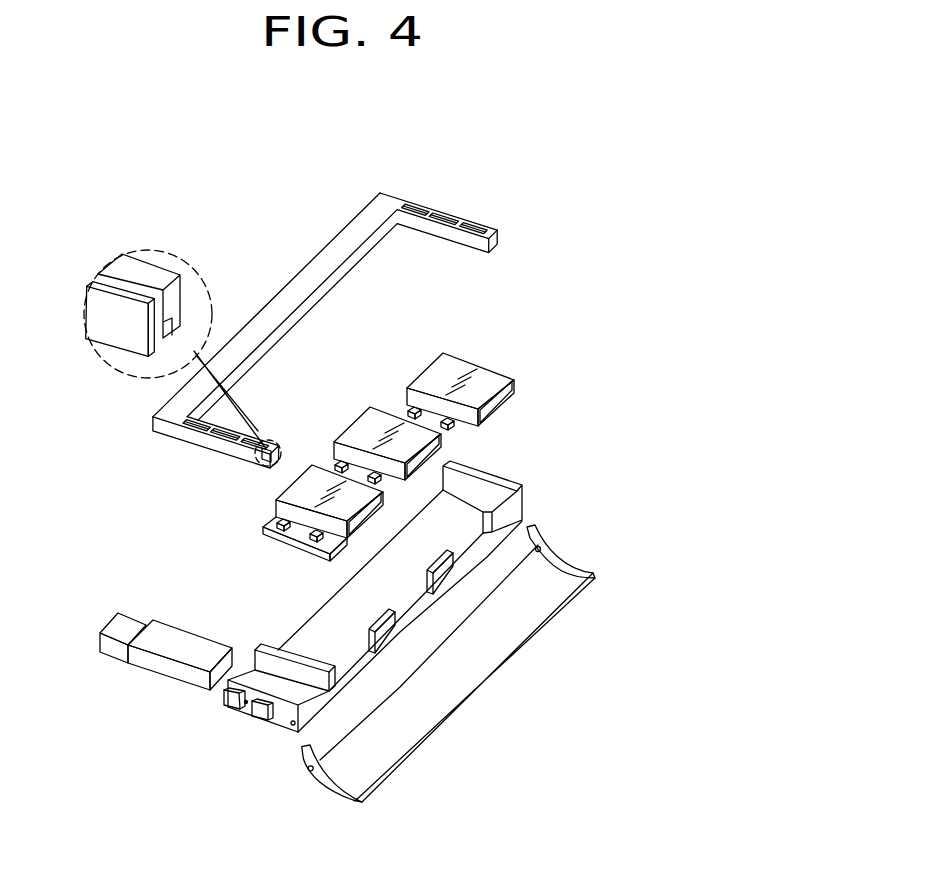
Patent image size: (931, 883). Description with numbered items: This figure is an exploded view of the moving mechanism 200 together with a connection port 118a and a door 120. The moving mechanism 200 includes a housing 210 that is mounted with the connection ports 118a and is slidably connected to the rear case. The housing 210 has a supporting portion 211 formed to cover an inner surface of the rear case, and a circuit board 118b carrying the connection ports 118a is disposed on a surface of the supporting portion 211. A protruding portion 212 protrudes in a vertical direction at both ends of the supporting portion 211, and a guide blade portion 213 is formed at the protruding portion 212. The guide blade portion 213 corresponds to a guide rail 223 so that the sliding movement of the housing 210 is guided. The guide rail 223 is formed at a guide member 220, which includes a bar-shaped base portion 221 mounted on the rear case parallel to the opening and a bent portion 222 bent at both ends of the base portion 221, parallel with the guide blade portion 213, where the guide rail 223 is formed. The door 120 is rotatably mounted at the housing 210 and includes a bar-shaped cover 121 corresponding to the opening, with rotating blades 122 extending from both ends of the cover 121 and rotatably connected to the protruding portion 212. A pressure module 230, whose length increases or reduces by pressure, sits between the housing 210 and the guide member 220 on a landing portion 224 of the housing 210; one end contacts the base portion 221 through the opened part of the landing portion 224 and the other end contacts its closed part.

The moving mechanism 200 is at (106, 576).
The guide member 220 is at (445, 188).
The base portion 221 is at (313, 268).
The bent portion 222 is at (438, 232).
The guide rail 223 is at (162, 326).
The landing portion 224 is at (248, 678).
The connection port 118a is at (480, 375).
The circuit board 118b is at (268, 522).
The housing 210 is at (281, 737).
The supporting portion 211 is at (470, 508).
The protruding portion 212 is at (205, 677).
The guide blade portion 213 is at (260, 715).
The pressure module 230 is at (140, 662).
The door 120 is at (565, 557).
The cover 121 is at (487, 642).
The rotating blade 122 is at (533, 527).